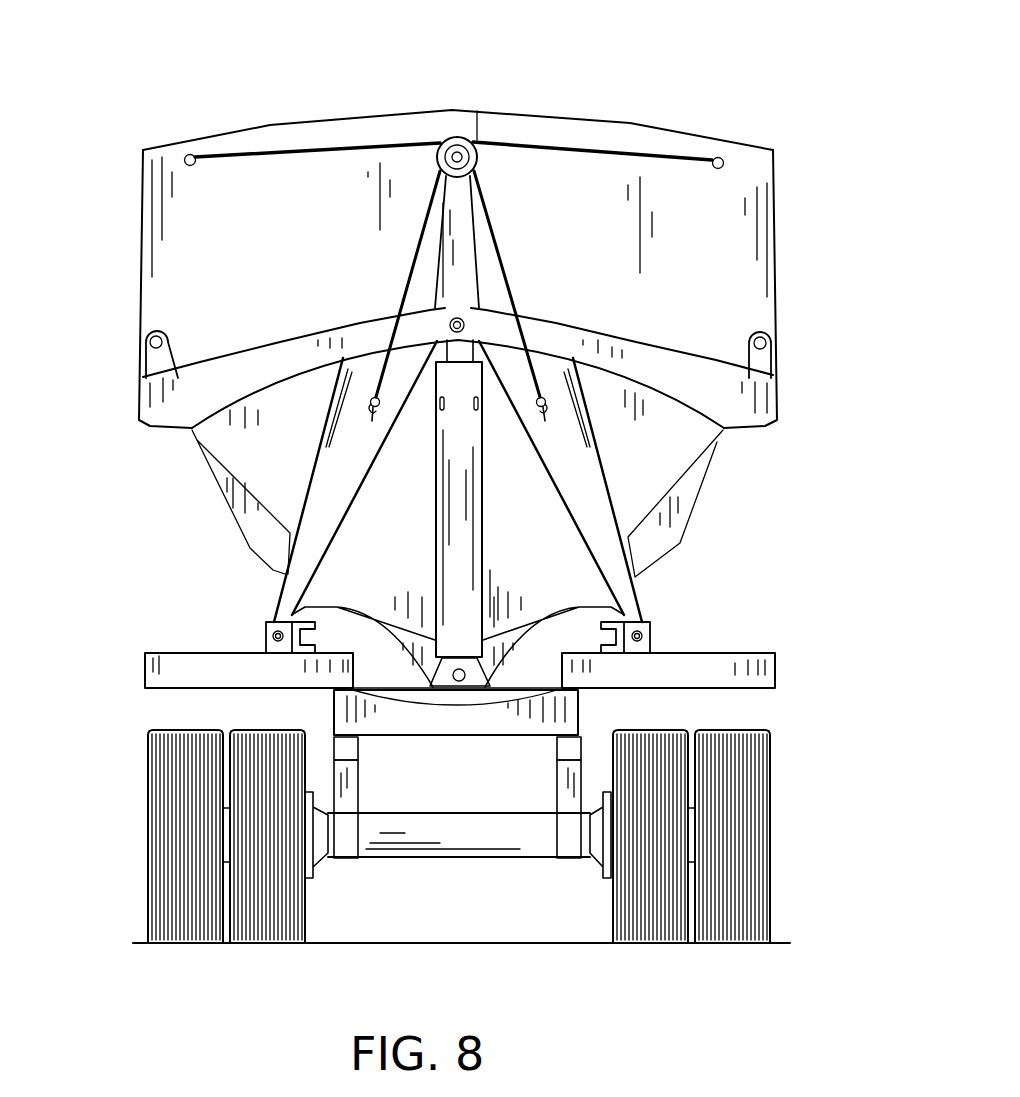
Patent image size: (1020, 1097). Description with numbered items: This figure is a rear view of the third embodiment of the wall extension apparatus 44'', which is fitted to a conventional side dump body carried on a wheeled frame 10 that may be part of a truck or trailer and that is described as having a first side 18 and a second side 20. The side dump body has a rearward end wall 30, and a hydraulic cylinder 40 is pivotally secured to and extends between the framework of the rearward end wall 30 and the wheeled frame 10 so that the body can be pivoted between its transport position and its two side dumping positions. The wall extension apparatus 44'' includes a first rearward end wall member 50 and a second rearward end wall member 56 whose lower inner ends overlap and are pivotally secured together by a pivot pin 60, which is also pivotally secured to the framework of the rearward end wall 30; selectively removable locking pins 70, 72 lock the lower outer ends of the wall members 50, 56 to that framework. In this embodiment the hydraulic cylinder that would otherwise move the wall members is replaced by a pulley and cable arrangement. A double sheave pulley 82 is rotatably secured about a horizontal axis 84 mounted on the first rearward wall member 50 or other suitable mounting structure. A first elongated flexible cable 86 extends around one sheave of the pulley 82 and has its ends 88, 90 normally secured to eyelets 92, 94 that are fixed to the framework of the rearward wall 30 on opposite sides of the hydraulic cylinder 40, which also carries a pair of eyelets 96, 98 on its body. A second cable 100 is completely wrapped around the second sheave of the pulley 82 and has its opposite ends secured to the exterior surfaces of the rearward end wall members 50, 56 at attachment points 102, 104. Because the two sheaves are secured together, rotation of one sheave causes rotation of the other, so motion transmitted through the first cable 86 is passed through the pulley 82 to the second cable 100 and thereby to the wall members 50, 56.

The wheeled frame 10 is at (800, 642).
The first side 18 is at (172, 541).
The second side 20 is at (725, 540).
The rearward end wall 30 is at (545, 578).
The hydraulic cylinder 40 is at (447, 513).
The wall extension apparatus 44'' is at (458, 220).
The first rearward end wall member 50 is at (277, 260).
The second rearward end wall member 56 is at (707, 247).
The pivot pin 60 is at (466, 322).
The locking pin 70 is at (148, 355).
The locking pin 72 is at (771, 348).
The double sheave pulley 82 is at (445, 143).
The horizontal axis 84 is at (459, 144).
The first elongated flexible cable 86 is at (487, 214).
The first cable end 88 is at (366, 405).
The first cable end 90 is at (549, 405).
The eyelet 92 is at (370, 422).
The eyelet 94 is at (548, 418).
The eyelet 96 is at (440, 410).
The eyelet 98 is at (478, 410).
The second cable 100 is at (292, 140).
The cable attachment point 102 is at (185, 157).
The cable attachment point 104 is at (720, 160).